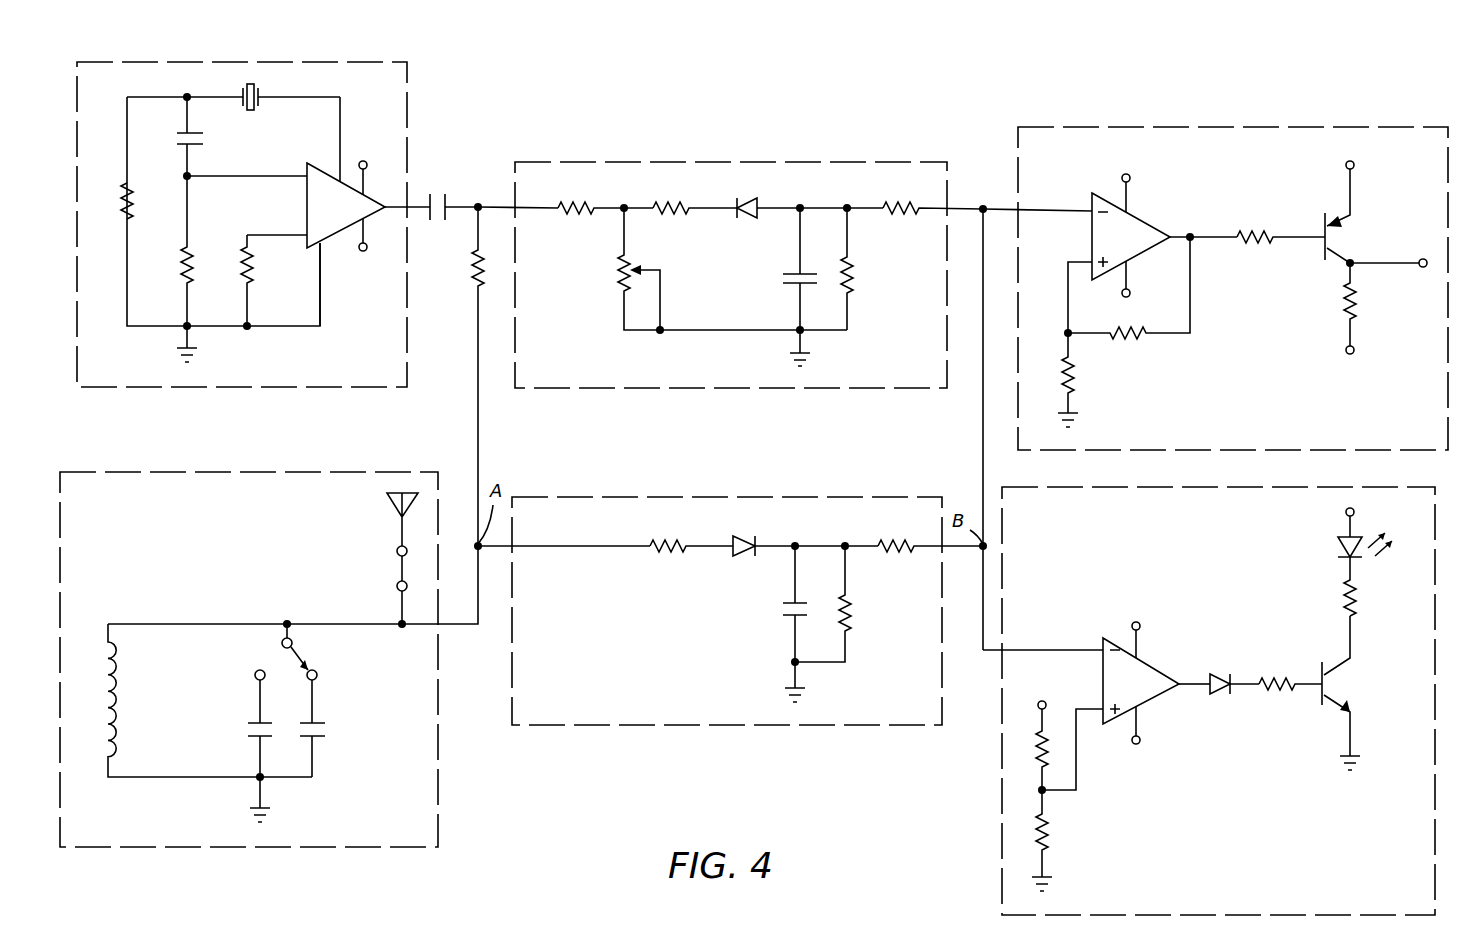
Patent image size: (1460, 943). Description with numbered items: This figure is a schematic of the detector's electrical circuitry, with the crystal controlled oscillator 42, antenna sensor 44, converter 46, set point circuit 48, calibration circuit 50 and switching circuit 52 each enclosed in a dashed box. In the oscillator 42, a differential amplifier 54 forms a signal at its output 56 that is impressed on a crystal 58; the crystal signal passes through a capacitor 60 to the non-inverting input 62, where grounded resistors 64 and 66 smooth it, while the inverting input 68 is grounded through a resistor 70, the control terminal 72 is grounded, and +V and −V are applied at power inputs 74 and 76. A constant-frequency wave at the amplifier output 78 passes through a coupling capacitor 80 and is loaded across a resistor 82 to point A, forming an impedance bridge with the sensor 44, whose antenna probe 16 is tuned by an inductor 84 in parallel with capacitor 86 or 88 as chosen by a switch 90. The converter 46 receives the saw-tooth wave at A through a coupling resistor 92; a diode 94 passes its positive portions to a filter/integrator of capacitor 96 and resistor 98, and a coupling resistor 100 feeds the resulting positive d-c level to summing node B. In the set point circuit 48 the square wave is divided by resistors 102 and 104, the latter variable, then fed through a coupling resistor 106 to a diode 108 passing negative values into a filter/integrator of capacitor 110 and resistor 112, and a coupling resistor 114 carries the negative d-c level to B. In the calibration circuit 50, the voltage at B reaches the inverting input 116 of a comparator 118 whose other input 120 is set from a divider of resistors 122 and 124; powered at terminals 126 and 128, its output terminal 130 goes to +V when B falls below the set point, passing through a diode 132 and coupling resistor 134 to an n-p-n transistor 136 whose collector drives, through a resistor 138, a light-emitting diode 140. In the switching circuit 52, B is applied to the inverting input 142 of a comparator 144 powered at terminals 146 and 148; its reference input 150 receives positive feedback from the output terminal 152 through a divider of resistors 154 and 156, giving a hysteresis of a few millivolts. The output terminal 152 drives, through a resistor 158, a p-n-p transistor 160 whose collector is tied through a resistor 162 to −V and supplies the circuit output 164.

The antenna probe 16 is at (396, 516).
The crystal controlled oscillator 42 is at (412, 86).
The antenna sensor 44 is at (440, 790).
The converter 46 is at (720, 725).
The set point circuit 48 is at (658, 162).
The calibration circuit 50 is at (1002, 838).
The switching circuit 52 is at (1045, 127).
The differential amplifier 54 is at (304, 207).
The output 56 is at (340, 178).
The crystal 58 is at (258, 92).
The capacitor 60 is at (177, 133).
The positive input 62 is at (307, 176).
The resistor 64 is at (127, 200).
The resistor 66 is at (180, 270).
The negative input 68 is at (305, 240).
The resistor 70 is at (243, 270).
The control terminal 72 is at (318, 244).
The power input 74 is at (375, 185).
The power input 76 is at (366, 222).
The amplifier output 78 is at (385, 207).
The coupling capacitor 80 is at (447, 192).
The resistor 82 is at (472, 262).
The inductor 84 is at (116, 683).
The capacitor 86 is at (257, 722).
The capacitor 88 is at (318, 725).
The switch 90 is at (300, 653).
The coupling resistor 92 is at (667, 545).
The semiconductor diode 94 is at (745, 545).
The capacitor 96 is at (782, 606).
The resistor 98 is at (850, 618).
The coupling resistor 100 is at (893, 545).
The resistor 102 is at (580, 205).
The variable resistor 104 is at (620, 288).
The coupling resistor 106 is at (672, 205).
The semiconductor diode 108 is at (755, 205).
The capacitor 110 is at (790, 270).
The resistor 112 is at (860, 275).
The coupling resistor 114 is at (893, 205).
The negative input 116 is at (1103, 650).
The operational amplifier 118 is at (1158, 672).
The positive input 120 is at (1103, 706).
The resistor 122 is at (1045, 758).
The resistor 124 is at (1045, 840).
The power terminal 126 is at (1140, 655).
The power terminal 128 is at (1140, 712).
The output terminal 130 is at (1180, 690).
The semiconductor diode 132 is at (1230, 672).
The coupling resistor 134 is at (1260, 703).
The transistor 136 is at (1335, 690).
The resistor 138 is at (1358, 600).
The light-emitting diode 140 is at (1338, 550).
The negative input 142 is at (1092, 212).
The operational amplifier 144 is at (1148, 220).
The power terminal 146 is at (1130, 205).
The power terminal 148 is at (1130, 264).
The positive input 150 is at (1092, 260).
The output terminal 152 is at (1182, 232).
The resistor 154 is at (1130, 338).
The resistor 156 is at (1072, 372).
The resistor 158 is at (1252, 232).
The second transistor 160 is at (1340, 242).
The resistor 162 is at (1348, 300).
The output terminal 164 is at (1420, 268).